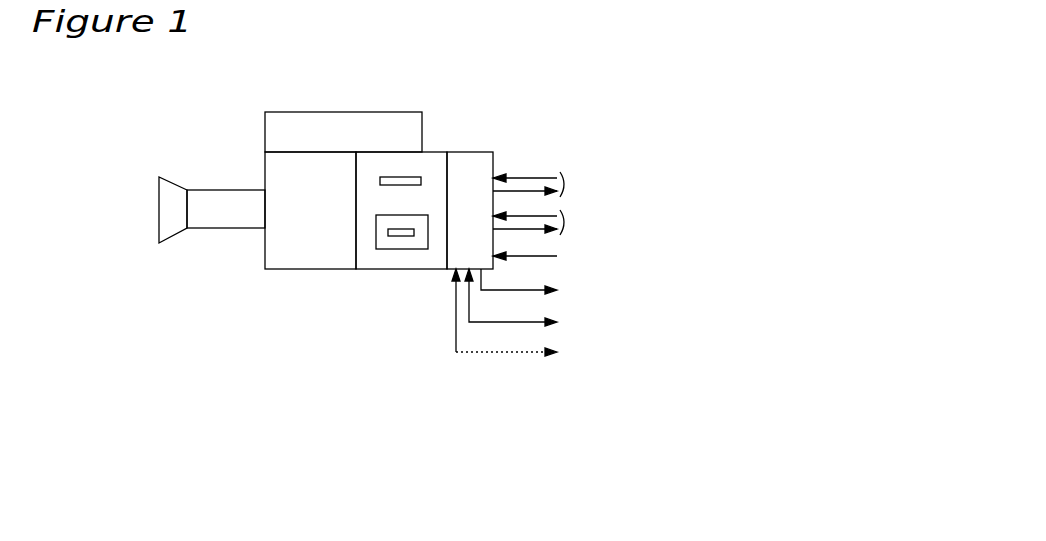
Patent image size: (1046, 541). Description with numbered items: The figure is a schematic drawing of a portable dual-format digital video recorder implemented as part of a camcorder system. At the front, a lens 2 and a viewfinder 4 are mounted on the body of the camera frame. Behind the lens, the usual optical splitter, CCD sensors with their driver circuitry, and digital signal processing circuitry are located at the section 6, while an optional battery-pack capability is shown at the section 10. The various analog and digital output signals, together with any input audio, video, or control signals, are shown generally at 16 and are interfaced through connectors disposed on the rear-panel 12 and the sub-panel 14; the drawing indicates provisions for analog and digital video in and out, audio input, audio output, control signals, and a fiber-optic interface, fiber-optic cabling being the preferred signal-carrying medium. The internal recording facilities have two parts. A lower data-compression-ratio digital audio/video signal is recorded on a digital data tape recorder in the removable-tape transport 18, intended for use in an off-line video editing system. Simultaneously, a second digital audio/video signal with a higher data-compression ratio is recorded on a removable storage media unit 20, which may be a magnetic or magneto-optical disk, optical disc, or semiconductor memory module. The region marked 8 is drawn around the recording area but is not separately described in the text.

The lens 2 is at (222, 190).
The viewfinder 4 is at (345, 111).
The optical-splitter, CCD sensors, driver circuitry and digital signal processing ci 6 is at (322, 269).
The recording unit 8 is at (402, 269).
The battery-pack capability 10 is at (458, 152).
The rear-panel 12 is at (493, 153).
The sub-panel 14 is at (452, 269).
The analog and digital input/output signals 16 is at (781, 131).
The removable-tape transport 18 is at (400, 250).
The removable storage media unit 20 is at (415, 175).